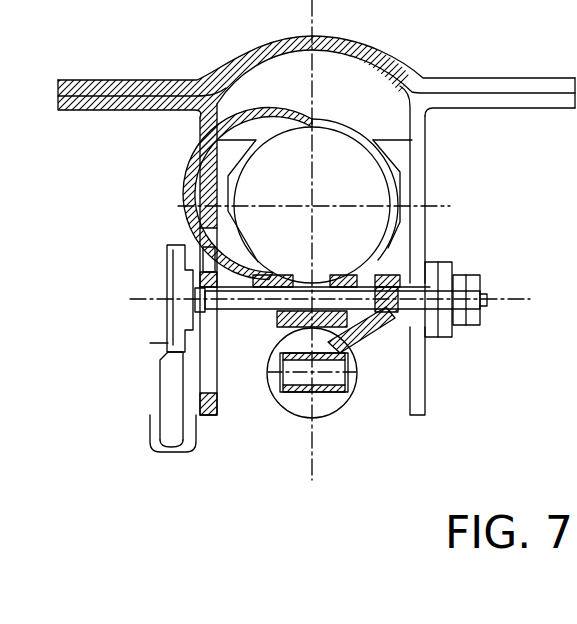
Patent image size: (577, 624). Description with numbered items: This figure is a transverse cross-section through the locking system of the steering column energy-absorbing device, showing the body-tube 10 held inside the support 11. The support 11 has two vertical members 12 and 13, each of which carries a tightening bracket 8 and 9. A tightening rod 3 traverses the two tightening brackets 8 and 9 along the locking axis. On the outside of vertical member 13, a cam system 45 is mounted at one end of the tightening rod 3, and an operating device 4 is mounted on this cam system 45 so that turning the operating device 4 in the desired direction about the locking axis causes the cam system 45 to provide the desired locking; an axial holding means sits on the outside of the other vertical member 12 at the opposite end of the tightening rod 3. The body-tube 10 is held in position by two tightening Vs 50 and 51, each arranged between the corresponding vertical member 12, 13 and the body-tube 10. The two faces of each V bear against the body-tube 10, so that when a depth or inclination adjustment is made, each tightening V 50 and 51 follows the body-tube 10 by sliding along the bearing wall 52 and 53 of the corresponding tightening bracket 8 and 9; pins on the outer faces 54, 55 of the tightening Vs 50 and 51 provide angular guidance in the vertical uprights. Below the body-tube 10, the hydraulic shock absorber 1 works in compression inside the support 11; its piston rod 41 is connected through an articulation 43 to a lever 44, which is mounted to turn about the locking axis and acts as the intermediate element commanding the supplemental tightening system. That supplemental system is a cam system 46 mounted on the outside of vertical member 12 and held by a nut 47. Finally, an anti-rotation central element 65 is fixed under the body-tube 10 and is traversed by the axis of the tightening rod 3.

The hydraulic shock absorber 1 is at (288, 413).
The tightening rod 3 is at (170, 363).
The operating device 4 is at (170, 406).
The tightening bracket 8 is at (428, 198).
The tightening bracket 9 is at (200, 160).
The body-tube 10 is at (358, 130).
The support 11 is at (110, 114).
The vertical member 12 is at (418, 145).
The vertical member 13 is at (200, 132).
The piston rod 41 is at (320, 398).
The articulation 43 is at (292, 407).
The lever 44 is at (387, 347).
The cam system 45 is at (168, 337).
The cam system 46 is at (445, 337).
The nut 47 is at (471, 322).
The tightening V 50 is at (393, 150).
The tightening V 51 is at (233, 147).
The bearing wall 52 is at (432, 176).
The bearing wall 53 is at (202, 176).
The outer face 54 is at (398, 244).
The outer face 55 is at (200, 240).
The central element 65 is at (274, 327).